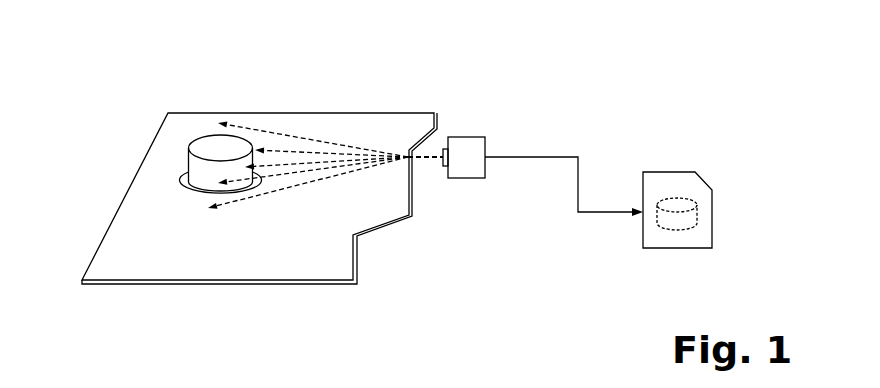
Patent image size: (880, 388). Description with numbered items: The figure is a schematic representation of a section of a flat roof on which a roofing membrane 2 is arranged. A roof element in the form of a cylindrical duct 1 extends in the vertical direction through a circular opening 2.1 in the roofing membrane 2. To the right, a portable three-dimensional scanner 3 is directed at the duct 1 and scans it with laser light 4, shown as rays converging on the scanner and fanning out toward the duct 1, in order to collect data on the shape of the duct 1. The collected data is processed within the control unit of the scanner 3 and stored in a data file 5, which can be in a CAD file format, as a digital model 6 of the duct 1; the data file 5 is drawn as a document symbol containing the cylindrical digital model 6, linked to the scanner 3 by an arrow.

The duct 1 is at (212, 147).
The roofing membrane 2 is at (105, 252).
The circular opening 2.1 is at (183, 172).
The 3D scanner 3 is at (467, 153).
The laser light 4 is at (313, 153).
The data file 5 is at (678, 180).
The digital model 6 is at (683, 222).